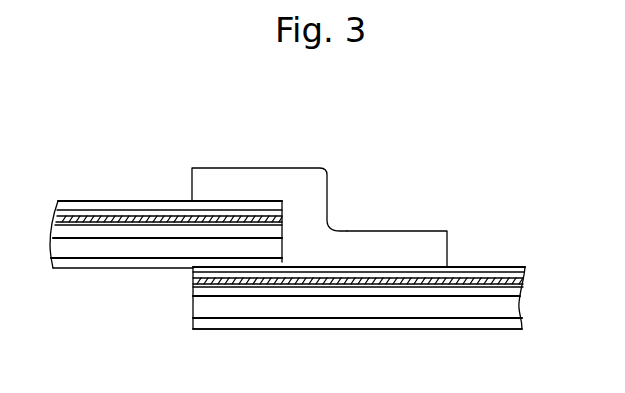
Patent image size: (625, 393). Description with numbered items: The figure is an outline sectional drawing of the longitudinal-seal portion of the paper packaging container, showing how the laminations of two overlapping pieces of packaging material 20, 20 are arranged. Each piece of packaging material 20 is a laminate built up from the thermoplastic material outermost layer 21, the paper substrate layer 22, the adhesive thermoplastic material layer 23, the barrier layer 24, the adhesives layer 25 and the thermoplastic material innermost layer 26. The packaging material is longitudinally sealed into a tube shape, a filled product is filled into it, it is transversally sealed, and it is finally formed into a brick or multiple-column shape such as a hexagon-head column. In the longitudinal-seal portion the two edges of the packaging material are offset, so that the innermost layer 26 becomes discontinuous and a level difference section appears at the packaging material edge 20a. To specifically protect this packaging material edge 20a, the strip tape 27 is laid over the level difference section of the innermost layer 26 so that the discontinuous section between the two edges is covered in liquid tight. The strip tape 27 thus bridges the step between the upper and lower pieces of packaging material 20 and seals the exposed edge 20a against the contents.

The packaging material 20 is at (112, 275).
The packaging material edge 20a is at (320, 266).
The strip tape 27 is at (370, 240).
The thermoplastic material innermost layer 26 is at (500, 276).
The adhesives layer 25 is at (528, 270).
The barrier layer 24 is at (528, 278).
The adhesive thermoplastic material layer 23 is at (523, 288).
The paper substrate layer 22 is at (522, 307).
The thermoplastic material outermost layer 21 is at (497, 326).